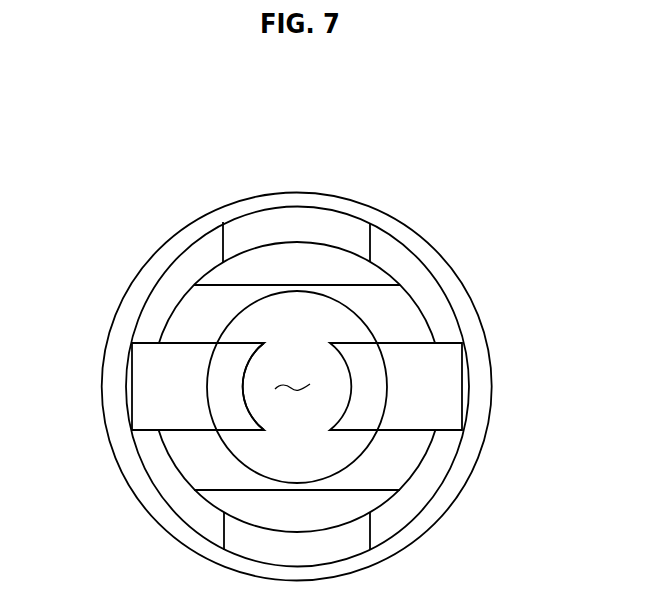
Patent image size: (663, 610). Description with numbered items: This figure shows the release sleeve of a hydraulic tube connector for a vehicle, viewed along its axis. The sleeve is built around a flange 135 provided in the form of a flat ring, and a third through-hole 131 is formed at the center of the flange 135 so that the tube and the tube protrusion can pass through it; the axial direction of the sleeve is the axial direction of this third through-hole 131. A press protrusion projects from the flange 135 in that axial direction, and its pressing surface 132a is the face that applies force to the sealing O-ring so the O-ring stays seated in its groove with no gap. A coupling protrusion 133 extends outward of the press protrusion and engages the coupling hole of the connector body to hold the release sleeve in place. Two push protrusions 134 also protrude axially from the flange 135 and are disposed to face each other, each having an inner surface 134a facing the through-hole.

The third through-hole 131 is at (288, 385).
The pressing surface 132a is at (335, 262).
The coupling protrusion 133 is at (248, 236).
The push protrusion 134 is at (445, 379).
The concave seating surface 134a is at (221, 387).
The flange 135 is at (424, 270).